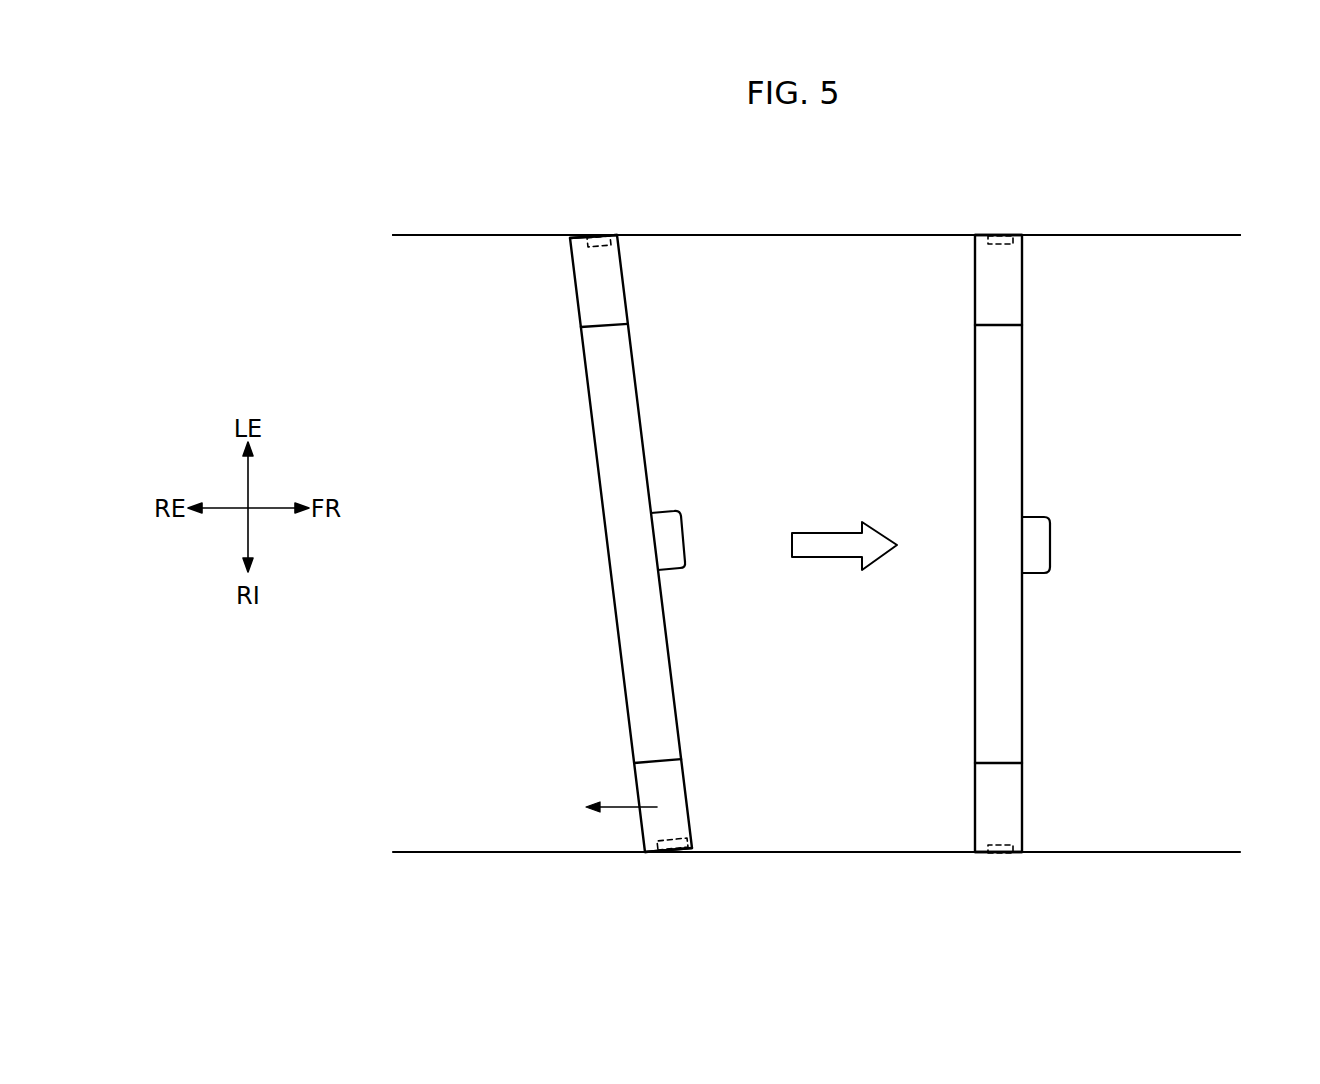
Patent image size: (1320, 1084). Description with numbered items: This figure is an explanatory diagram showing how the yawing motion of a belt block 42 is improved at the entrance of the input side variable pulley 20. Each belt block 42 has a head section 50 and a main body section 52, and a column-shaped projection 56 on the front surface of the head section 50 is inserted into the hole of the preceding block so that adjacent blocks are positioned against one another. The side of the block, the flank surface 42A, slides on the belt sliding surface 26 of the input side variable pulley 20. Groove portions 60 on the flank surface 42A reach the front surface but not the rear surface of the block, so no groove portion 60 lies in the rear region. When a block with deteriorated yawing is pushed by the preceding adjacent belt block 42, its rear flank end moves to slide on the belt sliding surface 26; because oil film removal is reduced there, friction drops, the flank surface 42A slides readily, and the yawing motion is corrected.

The input side variable pulley 20 is at (1182, 237).
The belt sliding surface 26 is at (806, 234).
The belt block 42 is at (596, 455).
The flank surface 42A is at (571, 236).
The head section 50 is at (632, 418).
The main body section 52 is at (615, 284).
The projection 56 is at (670, 524).
The groove portion 60 is at (607, 235).